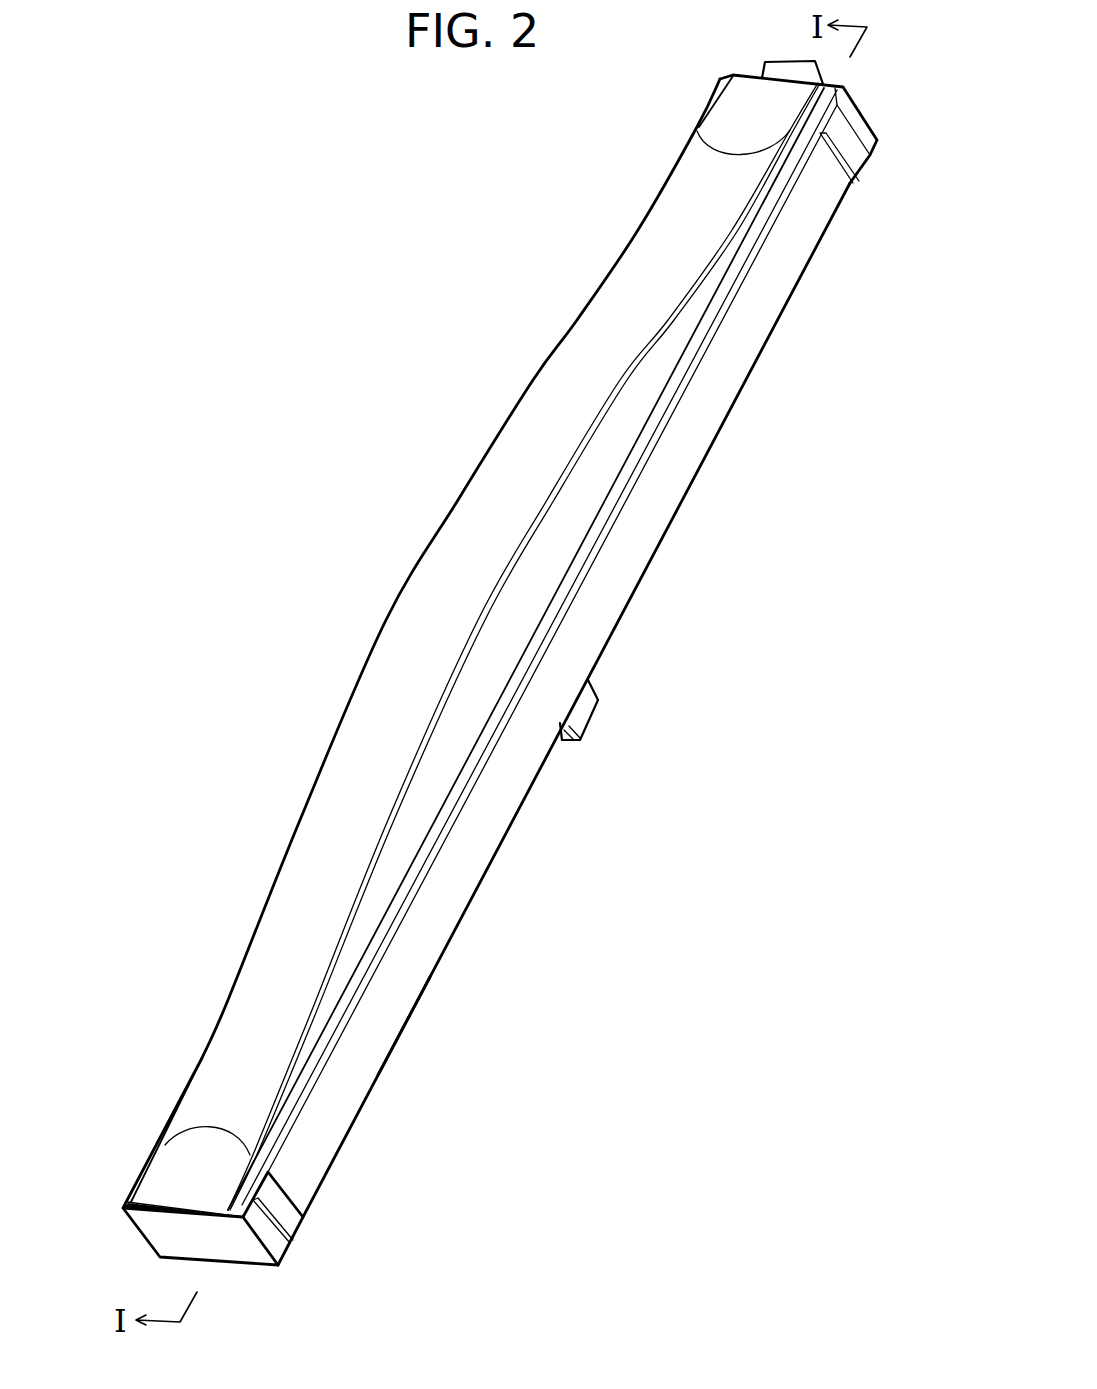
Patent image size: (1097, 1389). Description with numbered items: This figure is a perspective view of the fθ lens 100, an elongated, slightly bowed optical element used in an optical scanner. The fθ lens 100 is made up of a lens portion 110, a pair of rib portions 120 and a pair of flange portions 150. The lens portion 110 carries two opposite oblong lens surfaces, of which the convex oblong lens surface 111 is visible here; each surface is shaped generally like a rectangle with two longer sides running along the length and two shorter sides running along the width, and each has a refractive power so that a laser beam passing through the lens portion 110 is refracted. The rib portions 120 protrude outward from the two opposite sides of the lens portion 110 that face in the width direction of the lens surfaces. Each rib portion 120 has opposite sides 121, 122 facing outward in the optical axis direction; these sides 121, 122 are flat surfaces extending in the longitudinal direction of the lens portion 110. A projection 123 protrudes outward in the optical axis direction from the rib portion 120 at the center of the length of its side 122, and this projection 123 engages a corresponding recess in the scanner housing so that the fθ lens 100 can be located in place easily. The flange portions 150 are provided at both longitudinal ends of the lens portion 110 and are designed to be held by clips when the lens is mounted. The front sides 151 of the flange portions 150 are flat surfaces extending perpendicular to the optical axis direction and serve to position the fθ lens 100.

The fθ lens 100 is at (463, 247).
The lens portion 110 is at (302, 820).
The oblong lens surface 111 is at (420, 588).
The rib portion 120 is at (460, 878).
The side of rib portion 121 is at (378, 952).
The side of rib portion 122 is at (386, 1058).
The projection 123 is at (582, 724).
The flange portion 150 is at (719, 79).
The front side of flange portion 151 is at (745, 118).